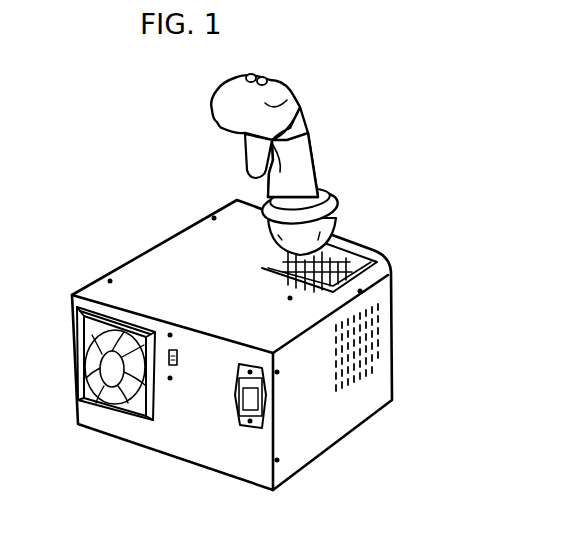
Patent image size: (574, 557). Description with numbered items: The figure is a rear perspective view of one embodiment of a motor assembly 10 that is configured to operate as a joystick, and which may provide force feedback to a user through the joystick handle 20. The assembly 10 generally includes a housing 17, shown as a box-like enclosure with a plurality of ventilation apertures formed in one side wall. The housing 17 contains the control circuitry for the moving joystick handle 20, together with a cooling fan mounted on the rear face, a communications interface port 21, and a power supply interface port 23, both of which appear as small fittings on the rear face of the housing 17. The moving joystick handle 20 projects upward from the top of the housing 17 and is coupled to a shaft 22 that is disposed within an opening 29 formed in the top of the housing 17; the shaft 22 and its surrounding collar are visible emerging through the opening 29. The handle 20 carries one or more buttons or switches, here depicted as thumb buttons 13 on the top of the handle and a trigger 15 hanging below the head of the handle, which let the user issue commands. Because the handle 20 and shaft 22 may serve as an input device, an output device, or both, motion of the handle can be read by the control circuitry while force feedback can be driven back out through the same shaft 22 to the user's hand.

The motor assembly 10 is at (390, 107).
The thumb buttons 13 is at (252, 73).
The trigger 15 is at (245, 157).
The housing 17 is at (323, 451).
The joystick handle 20 is at (291, 91).
The communications interface port 21 is at (178, 364).
The shaft 22 is at (350, 243).
The power supply interface port 23 is at (238, 402).
The opening 29 is at (360, 261).